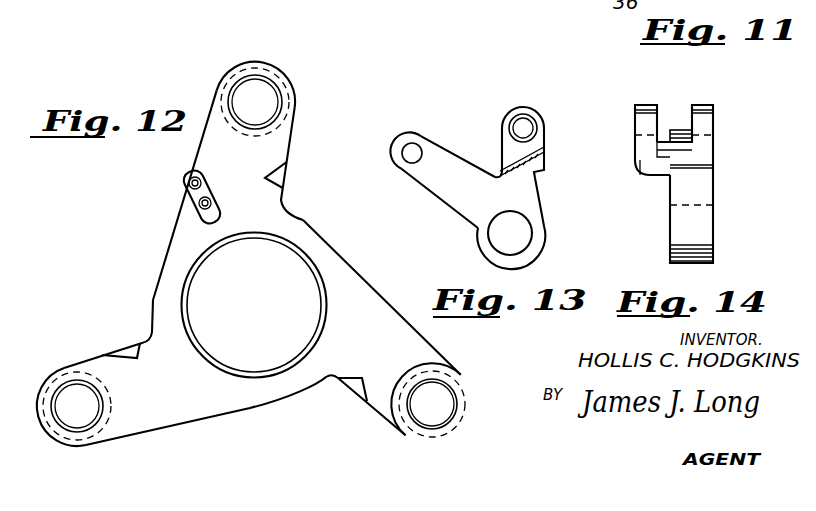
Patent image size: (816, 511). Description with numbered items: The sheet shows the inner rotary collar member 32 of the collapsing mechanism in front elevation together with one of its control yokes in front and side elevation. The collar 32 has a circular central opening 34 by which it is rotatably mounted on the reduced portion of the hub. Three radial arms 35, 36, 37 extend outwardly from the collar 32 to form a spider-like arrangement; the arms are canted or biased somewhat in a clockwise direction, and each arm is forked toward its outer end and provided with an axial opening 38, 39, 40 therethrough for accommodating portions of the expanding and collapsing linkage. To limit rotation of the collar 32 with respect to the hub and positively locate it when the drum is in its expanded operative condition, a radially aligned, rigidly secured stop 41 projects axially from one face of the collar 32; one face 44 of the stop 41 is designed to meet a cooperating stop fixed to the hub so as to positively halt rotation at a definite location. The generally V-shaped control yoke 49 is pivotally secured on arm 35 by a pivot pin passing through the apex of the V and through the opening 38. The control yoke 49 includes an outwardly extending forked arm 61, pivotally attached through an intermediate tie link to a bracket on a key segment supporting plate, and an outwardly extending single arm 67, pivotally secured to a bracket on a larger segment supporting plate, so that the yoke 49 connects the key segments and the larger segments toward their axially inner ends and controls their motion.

In FIG. 12, the inner rotary collar member 32 is at (195, 410).
In FIG. 12, the circular central opening 34 is at (322, 306).
In FIG. 12, the radial arm 35 is at (278, 143).
In FIG. 12, the radial arm 36 is at (392, 313).
In FIG. 12, the radial arm 37 is at (98, 342).
In FIG. 12, the axial opening 38 is at (261, 87).
In FIG. 12, the axial opening 39 is at (410, 402).
In FIG. 12, the axial opening 40 is at (97, 408).
In FIG. 12, the stop 41 is at (190, 197).
In FIG. 12, the face 44 is at (212, 180).
In FIG. 13, the control yoke 49 is at (477, 191).
In FIG. 13, the forked arm 61 is at (537, 147).
In FIG. 14, the forked arm 61 is at (635, 147).
In FIG. 13, the single arm 67 is at (432, 188).
In FIG. 14, the single arm 67 is at (678, 128).